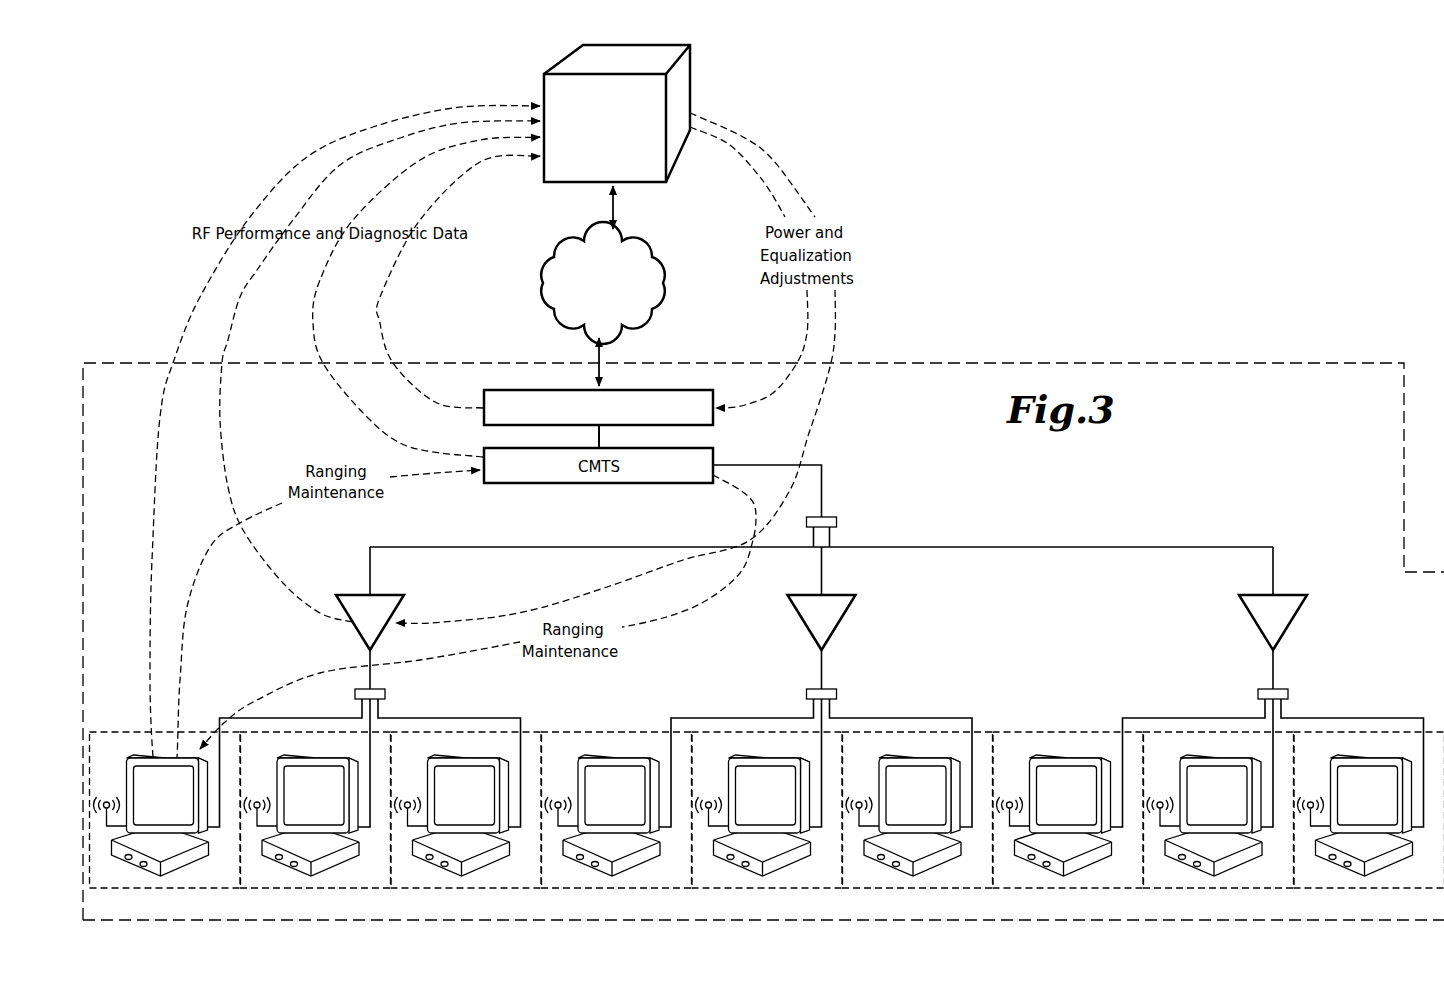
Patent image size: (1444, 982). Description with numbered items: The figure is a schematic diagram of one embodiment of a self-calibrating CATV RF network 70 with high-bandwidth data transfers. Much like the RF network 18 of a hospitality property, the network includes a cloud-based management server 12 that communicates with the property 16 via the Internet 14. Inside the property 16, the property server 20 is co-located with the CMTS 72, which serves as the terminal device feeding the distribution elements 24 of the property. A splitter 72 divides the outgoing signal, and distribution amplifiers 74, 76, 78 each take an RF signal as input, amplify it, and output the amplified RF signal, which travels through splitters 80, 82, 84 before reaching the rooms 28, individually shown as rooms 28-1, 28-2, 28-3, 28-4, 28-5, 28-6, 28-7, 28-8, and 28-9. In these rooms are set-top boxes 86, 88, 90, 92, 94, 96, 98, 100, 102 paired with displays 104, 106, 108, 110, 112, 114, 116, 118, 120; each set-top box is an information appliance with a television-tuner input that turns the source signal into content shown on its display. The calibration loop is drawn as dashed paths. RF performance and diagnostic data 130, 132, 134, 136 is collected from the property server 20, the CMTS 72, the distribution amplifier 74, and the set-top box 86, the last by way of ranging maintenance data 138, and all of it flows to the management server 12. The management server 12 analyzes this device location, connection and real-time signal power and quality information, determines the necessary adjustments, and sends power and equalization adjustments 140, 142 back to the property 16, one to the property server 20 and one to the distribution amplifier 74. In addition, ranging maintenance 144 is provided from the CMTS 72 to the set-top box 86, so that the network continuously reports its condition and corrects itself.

The management server 12 is at (687, 80).
The Internet 14 is at (665, 280).
The property 16 is at (1190, 363).
The RF network 18 is at (821, 495).
The property server 20 is at (694, 390).
The distribution elements 24 is at (328, 656).
The rooms 28 is at (113, 729).
The room 28-1 is at (136, 889).
The room 28-2 is at (286, 889).
The room 28-3 is at (436, 889).
The room 28-4 is at (587, 889).
The room 28-5 is at (738, 889).
The room 28-6 is at (888, 889).
The room 28-7 is at (1038, 889).
The room 28-8 is at (1189, 889).
The room 28-9 is at (1340, 889).
The self-calibrating CATV RF network 70 is at (1057, 545).
The CMTS 72 is at (832, 516).
The distribution amplifier 74 is at (370, 618).
The distribution amplifier 76 is at (822, 618).
The distribution amplifier 78 is at (1273, 618).
The splitter 80 is at (382, 688).
The splitter 82 is at (832, 688).
The splitter 84 is at (1284, 688).
The set-top box 86 is at (178, 860).
The set-top box 88 is at (329, 860).
The set-top box 90 is at (480, 860).
The set-top box 92 is at (630, 860).
The set-top box 94 is at (780, 860).
The set-top box 96 is at (931, 860).
The set-top box 98 is at (1082, 860).
The set-top box 100 is at (1232, 860).
The set-top box 102 is at (1382, 860).
The display 104 is at (151, 794).
The display 106 is at (301, 794).
The display 108 is at (452, 794).
The display 110 is at (602, 794).
The display 112 is at (753, 794).
The display 114 is at (903, 794).
The display 116 is at (1054, 794).
The display 118 is at (1204, 794).
The display 120 is at (1355, 794).
The RF performance and diagnostic data 130 is at (381, 292).
The RF performance and diagnostic data 132 is at (350, 405).
The RF performance and diagnostic data 134 is at (228, 490).
The RF performance and diagnostic data 136 is at (200, 297).
The ranging maintenance data 138 is at (187, 608).
The power and equalization adjustments 140 is at (760, 178).
The power and equalization adjustments 142 is at (767, 157).
The ranging maintenance 144 is at (663, 620).